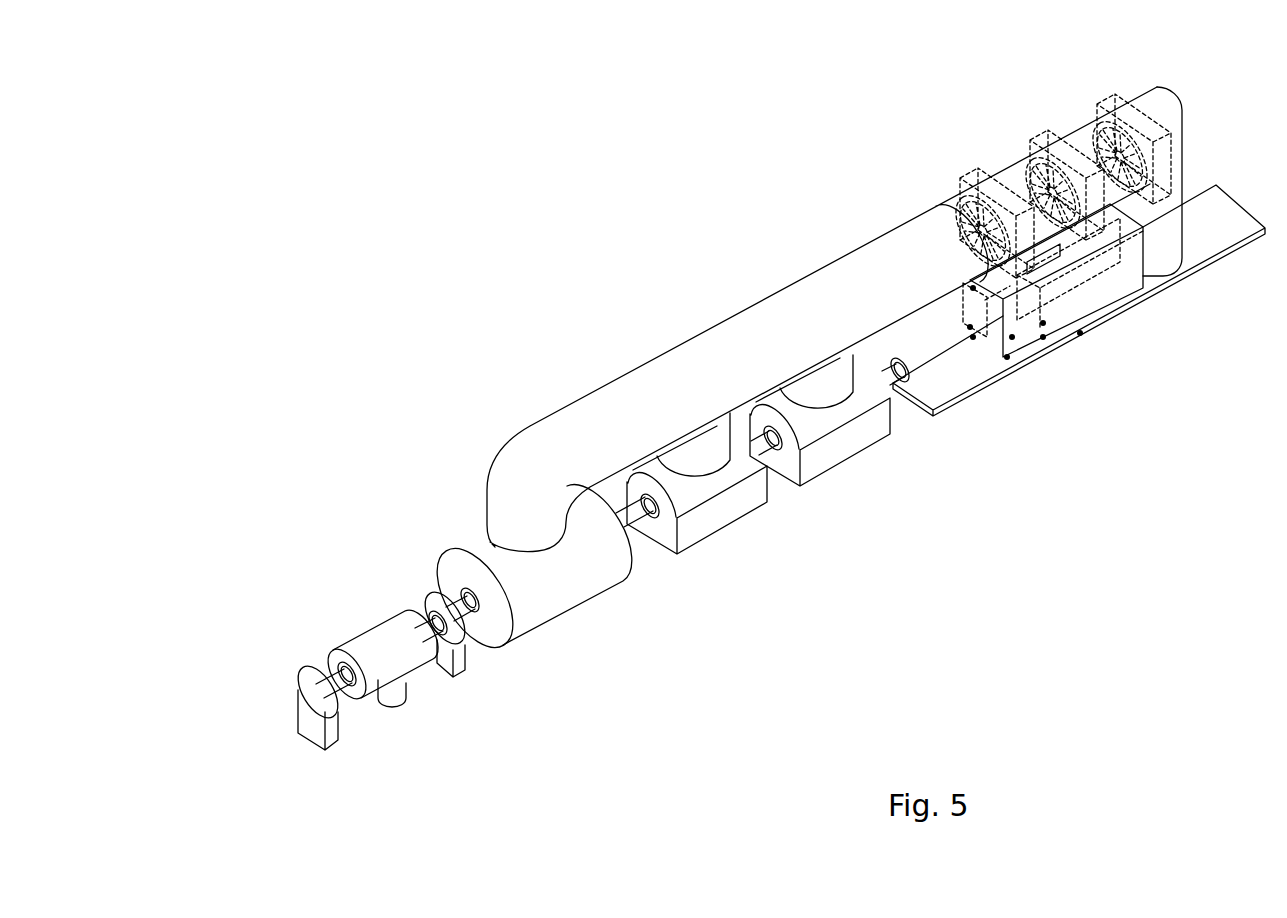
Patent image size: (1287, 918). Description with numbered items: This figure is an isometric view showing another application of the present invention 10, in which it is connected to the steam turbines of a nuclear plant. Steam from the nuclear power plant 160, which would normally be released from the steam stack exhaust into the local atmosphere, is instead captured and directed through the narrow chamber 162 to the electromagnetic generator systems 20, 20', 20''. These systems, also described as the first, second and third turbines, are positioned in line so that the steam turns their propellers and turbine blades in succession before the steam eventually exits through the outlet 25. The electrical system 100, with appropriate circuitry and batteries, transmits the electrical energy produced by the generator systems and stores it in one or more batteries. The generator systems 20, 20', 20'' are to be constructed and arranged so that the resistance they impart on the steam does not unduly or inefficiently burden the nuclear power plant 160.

The present invention 10 is at (808, 103).
The electromagnetic generator system 20 is at (958, 197).
The electromagnetic generator system 20' is at (1028, 164).
The electromagnetic generator system 20'' is at (1100, 133).
The outlet 25 is at (1172, 110).
The electrical system 100 is at (1084, 342).
The nuclear power plant 160 is at (362, 380).
The narrow chamber 162 is at (688, 328).